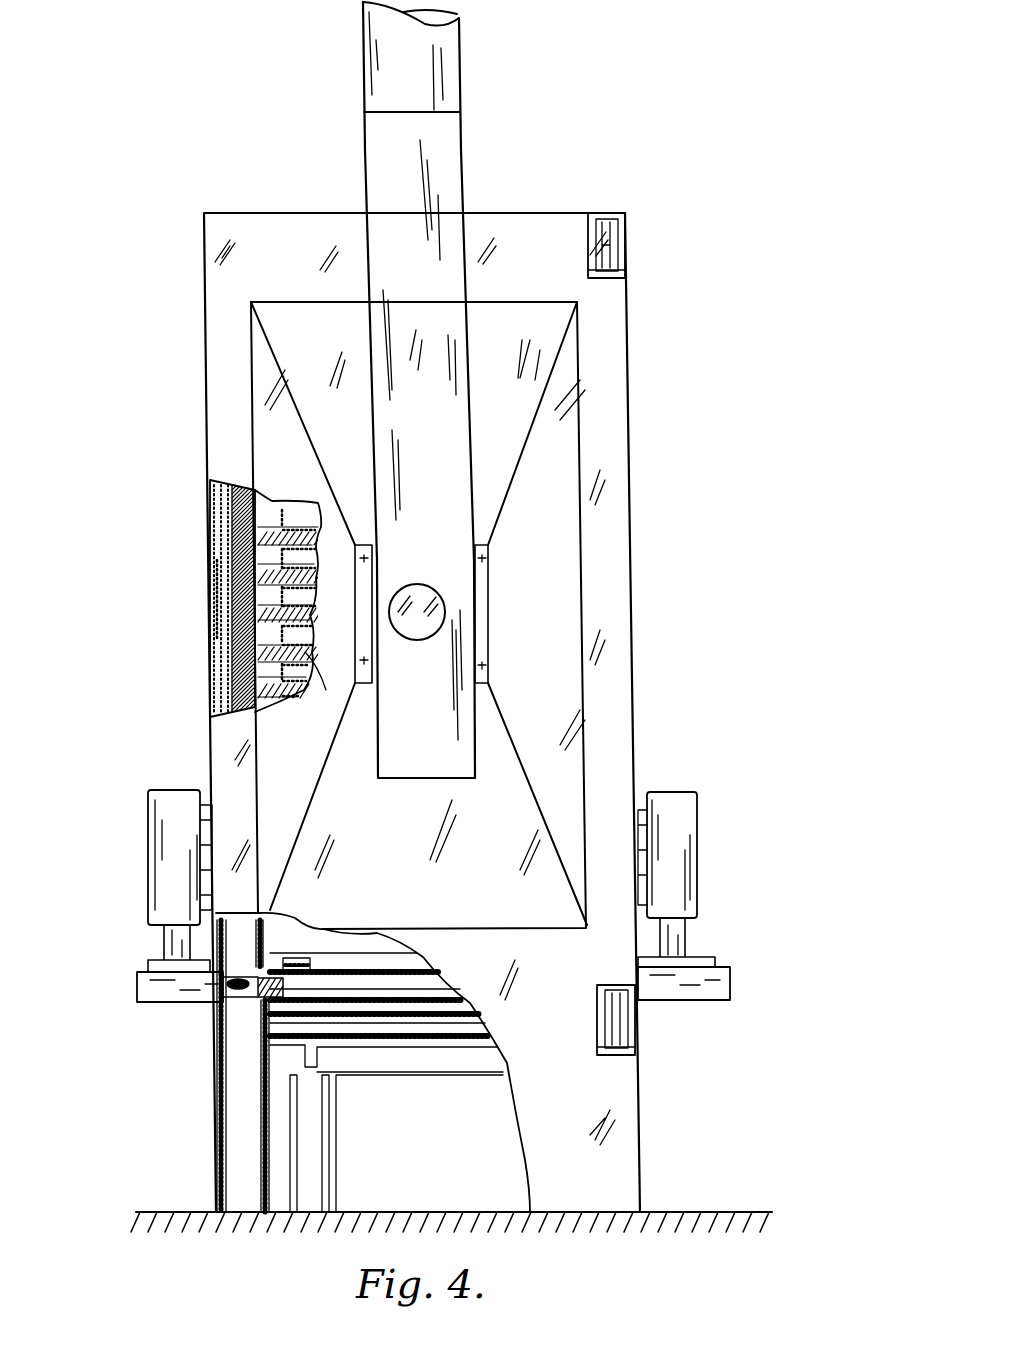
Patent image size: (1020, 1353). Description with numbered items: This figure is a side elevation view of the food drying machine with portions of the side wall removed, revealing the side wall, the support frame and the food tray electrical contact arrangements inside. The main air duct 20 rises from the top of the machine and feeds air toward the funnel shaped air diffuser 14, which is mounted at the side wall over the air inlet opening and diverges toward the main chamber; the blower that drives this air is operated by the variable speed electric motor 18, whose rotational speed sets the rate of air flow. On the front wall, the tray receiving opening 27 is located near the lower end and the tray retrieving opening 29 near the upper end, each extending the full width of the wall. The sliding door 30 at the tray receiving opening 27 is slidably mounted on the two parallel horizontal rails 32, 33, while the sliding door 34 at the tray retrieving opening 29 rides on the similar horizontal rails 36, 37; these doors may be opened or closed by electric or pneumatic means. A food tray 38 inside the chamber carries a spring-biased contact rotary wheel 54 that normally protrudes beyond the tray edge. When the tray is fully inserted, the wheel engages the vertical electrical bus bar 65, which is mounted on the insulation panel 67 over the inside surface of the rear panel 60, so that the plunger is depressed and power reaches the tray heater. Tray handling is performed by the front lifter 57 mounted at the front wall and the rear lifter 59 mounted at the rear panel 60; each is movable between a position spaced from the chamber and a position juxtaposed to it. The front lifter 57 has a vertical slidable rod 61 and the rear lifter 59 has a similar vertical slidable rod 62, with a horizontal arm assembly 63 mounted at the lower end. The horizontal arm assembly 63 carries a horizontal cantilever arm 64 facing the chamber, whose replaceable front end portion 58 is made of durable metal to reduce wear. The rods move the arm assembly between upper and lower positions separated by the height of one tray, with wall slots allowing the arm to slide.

The funnel shaped air diffuser 14 is at (560, 432).
The variable speed electric motor 18 is at (433, 608).
The main air duct 20 is at (457, 197).
The tray receiving opening 27 is at (640, 1018).
The tray retrieving opening 29 is at (622, 255).
The sliding door 30 is at (612, 1025).
The horizontal rail 32 is at (600, 1003).
The horizontal rail 33 is at (637, 1055).
The sliding door 34 is at (620, 245).
The horizontal rail 36 is at (620, 213).
The horizontal rail 37 is at (621, 279).
The food tray 38 is at (325, 688).
The contact rotary wheel 54 is at (263, 553).
The front lifter 57 is at (690, 792).
The front end portion 58 is at (298, 972).
The rear lifter 59 is at (168, 790).
The rear panel 60 is at (214, 492).
The vertical slidable rod 61 is at (685, 942).
The vertical slidable rod 62 is at (170, 945).
The horizontal arm assembly 63 is at (150, 1002).
The horizontal cantilever arm 64 is at (250, 988).
The electrical bus bar 65 is at (213, 632).
The insulation panel 67 is at (211, 556).